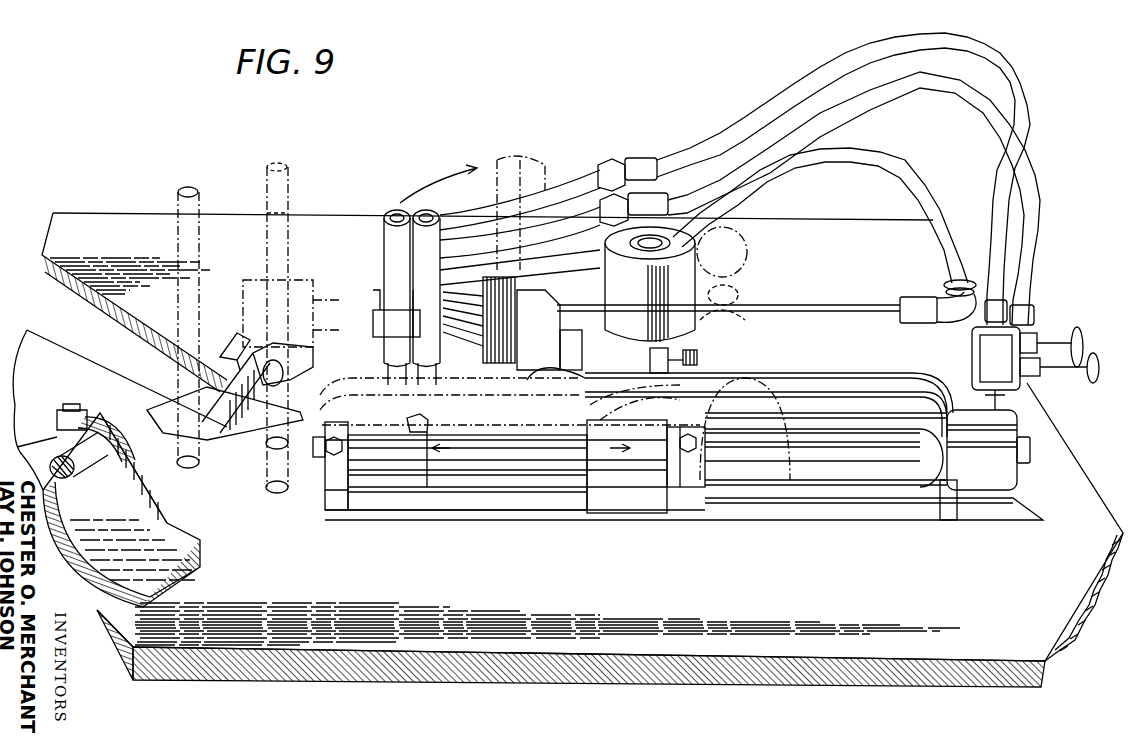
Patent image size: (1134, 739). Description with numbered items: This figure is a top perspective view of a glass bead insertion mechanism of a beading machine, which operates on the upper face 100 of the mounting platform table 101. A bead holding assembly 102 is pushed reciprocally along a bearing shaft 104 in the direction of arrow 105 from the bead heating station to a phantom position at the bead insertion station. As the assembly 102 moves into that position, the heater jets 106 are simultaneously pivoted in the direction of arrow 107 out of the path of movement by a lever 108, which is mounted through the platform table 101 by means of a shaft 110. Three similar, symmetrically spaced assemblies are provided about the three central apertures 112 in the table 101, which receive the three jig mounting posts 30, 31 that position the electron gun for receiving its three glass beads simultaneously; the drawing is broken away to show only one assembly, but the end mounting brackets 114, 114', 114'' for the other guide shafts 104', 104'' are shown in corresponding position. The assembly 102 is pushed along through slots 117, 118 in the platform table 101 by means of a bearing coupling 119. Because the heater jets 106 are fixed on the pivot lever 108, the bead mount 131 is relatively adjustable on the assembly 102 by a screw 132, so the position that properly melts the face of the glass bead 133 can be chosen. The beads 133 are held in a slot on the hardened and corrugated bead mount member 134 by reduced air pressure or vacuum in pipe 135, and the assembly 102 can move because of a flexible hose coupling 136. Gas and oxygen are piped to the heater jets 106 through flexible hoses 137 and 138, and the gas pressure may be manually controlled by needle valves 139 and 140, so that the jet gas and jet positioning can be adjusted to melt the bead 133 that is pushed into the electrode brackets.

The jig mounting post 30 is at (289, 213).
The jig mounting post 31 is at (289, 170).
The upper face 100 is at (1069, 572).
The mounting platform table 101 is at (986, 690).
The bead holding assembly 102 is at (805, 373).
The bearing shaft 104 is at (1029, 450).
The guide shaft 104' is at (77, 441).
The guide shaft 104'' is at (225, 336).
The arrow 105 is at (497, 447).
The heater jets 106 is at (383, 264).
The arrow 107 is at (430, 178).
The lever 108 is at (593, 256).
The shaft 110 is at (717, 216).
The apertures 112 is at (199, 462).
The end mounting brackets 114 is at (365, 442).
The end mounting bracket 114' is at (135, 510).
The end mounting bracket 114'' is at (215, 391).
The slot 117 is at (1007, 520).
The slot 118 is at (318, 506).
The bearing coupling 119 is at (950, 522).
The bead mount 131 is at (486, 352).
The screw 132 is at (698, 358).
The glass bead 133 is at (497, 279).
The bead mount member 134 is at (522, 342).
The pipe 135 is at (795, 308).
The flexible hose coupling 136 is at (881, 164).
The flexible hose 137 is at (1007, 73).
The flexible hose 138 is at (1032, 165).
The needle valve 139 is at (1035, 333).
The needle valve 140 is at (1093, 353).